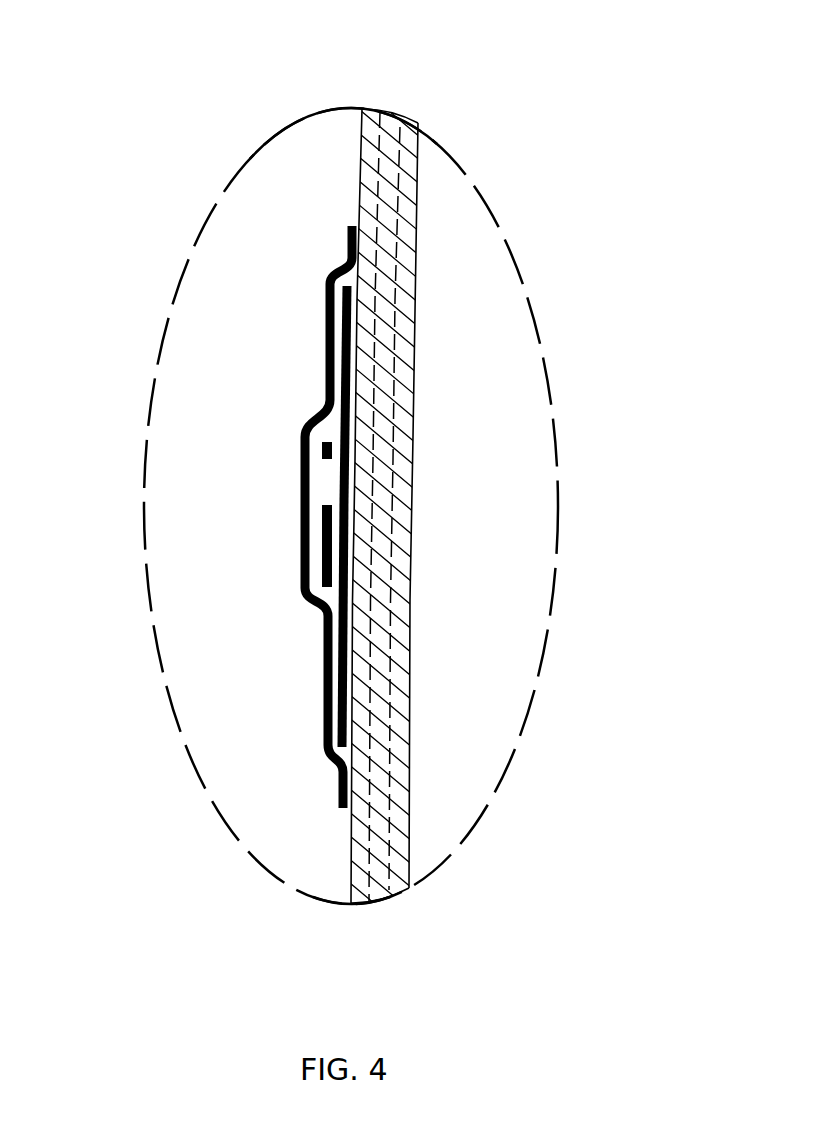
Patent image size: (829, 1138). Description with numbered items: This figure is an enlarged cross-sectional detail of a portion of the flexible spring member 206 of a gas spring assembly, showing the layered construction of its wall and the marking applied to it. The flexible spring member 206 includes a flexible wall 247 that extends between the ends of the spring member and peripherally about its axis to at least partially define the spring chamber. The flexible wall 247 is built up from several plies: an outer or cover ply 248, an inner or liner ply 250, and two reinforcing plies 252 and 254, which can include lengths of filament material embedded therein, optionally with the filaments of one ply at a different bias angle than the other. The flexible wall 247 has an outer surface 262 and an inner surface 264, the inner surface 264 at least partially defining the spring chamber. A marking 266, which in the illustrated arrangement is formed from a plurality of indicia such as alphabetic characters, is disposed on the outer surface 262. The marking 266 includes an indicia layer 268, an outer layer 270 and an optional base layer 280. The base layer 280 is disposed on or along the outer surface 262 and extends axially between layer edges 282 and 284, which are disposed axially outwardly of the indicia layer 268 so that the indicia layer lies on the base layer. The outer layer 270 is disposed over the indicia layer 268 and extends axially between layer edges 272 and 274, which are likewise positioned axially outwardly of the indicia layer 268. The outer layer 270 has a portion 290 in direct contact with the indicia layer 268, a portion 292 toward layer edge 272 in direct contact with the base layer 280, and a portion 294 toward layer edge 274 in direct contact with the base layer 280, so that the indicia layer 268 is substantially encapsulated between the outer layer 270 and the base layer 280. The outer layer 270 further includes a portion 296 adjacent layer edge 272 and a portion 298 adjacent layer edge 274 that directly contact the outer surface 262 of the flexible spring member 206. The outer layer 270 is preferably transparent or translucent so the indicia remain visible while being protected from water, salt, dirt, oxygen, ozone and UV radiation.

The flexible spring member 206 is at (352, 141).
The flexible wall 247 is at (411, 530).
The outer or cover ply 248 is at (353, 883).
The inner or liner ply 250 is at (408, 190).
The reinforcing ply 252 is at (370, 853).
The reinforcing ply 254 is at (390, 638).
The outer surface 262 is at (362, 170).
The inner surface 264 is at (412, 412).
The marking 266 is at (220, 360).
The indicia layer 268 is at (322, 553).
The outer layer 270 is at (285, 512).
The layer edge 272 is at (353, 222).
The layer edge 274 is at (342, 808).
The base layer 280 is at (330, 475).
The layer edge 282 is at (350, 281).
The layer edge 284 is at (370, 785).
The portion 290 is at (322, 528).
The portion 292 is at (323, 335).
The portion 294 is at (323, 673).
The portion 296 is at (347, 237).
The portion 298 is at (340, 795).